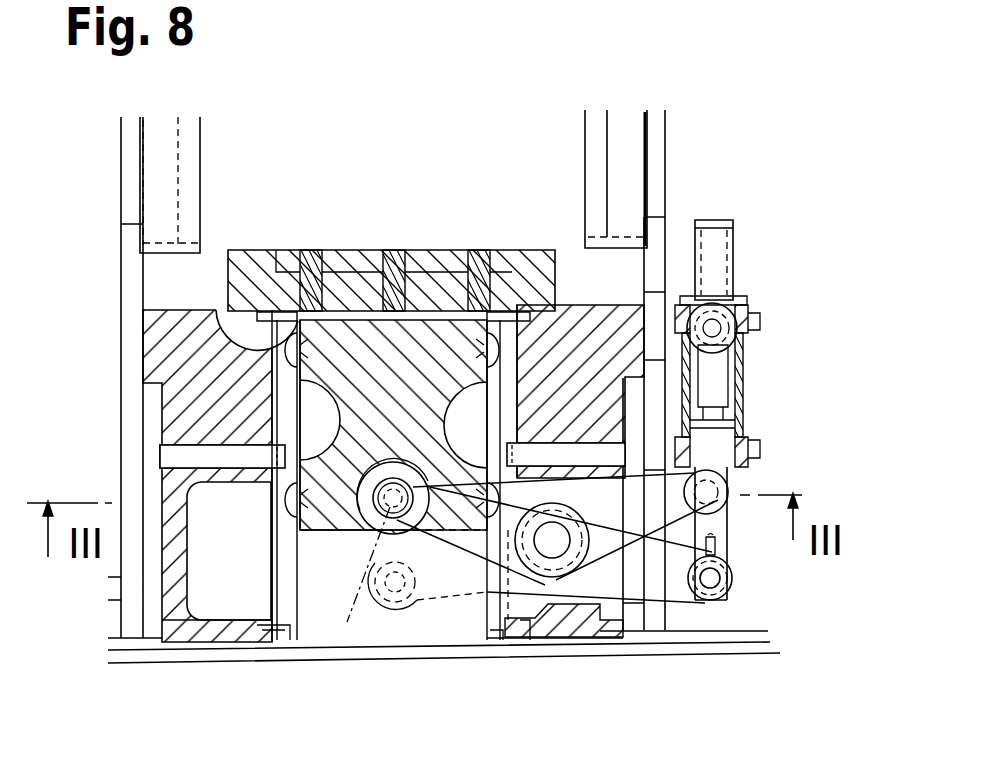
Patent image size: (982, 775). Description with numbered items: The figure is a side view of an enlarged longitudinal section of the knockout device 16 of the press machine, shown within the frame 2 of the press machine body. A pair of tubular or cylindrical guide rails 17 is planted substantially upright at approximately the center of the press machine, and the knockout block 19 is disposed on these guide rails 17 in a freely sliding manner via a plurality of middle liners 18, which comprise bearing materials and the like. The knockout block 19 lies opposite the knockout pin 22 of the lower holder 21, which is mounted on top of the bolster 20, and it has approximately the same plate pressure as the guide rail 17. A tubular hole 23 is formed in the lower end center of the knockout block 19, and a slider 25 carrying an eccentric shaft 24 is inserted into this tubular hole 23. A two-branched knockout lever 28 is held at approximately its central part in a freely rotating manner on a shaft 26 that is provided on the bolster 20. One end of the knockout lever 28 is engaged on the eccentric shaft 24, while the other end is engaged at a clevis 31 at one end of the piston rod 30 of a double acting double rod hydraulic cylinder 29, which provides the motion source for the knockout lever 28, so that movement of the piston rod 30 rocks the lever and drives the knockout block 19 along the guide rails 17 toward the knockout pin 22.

The frame 2 is at (661, 228).
The knockout device 16 is at (158, 327).
The guide rails 17 is at (278, 581).
The middle liners 18 is at (258, 345).
The knockout block 19 is at (362, 350).
The bolster 20 is at (575, 365).
The lower holder 21 is at (254, 257).
The knockout pin 22 is at (312, 250).
The tubular hole 23 is at (360, 484).
The eccentric shaft 24 is at (358, 584).
The slider 25 is at (373, 503).
The shaft 26 is at (553, 543).
The knockout lever 28 is at (598, 578).
The double acting double rod hydraulic cylinder 29 is at (745, 390).
The piston rod 30 is at (728, 538).
The clevis 31 is at (717, 583).